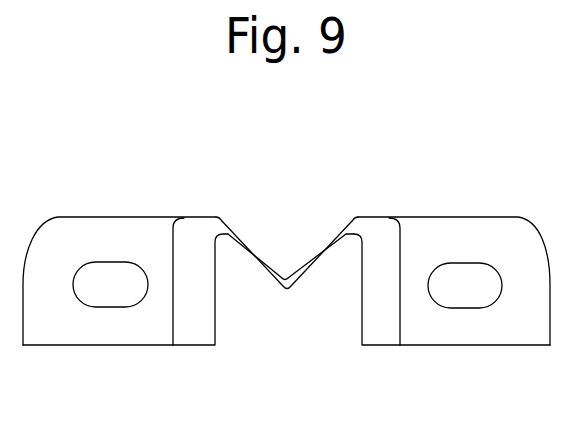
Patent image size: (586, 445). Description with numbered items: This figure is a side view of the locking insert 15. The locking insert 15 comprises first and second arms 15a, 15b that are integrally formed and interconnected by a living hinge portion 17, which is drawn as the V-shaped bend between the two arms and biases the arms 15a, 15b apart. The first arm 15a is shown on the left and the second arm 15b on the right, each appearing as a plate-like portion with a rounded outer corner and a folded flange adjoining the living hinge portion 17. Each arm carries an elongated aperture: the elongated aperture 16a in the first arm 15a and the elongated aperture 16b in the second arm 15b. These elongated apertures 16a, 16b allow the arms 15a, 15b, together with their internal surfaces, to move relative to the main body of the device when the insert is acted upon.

The locking insert 15 is at (293, 187).
The first arm 15a is at (74, 230).
The second arm 15b is at (502, 232).
The elongated aperture 16a is at (108, 293).
The elongated aperture 16b is at (468, 293).
The living hinge portion 17 is at (283, 292).